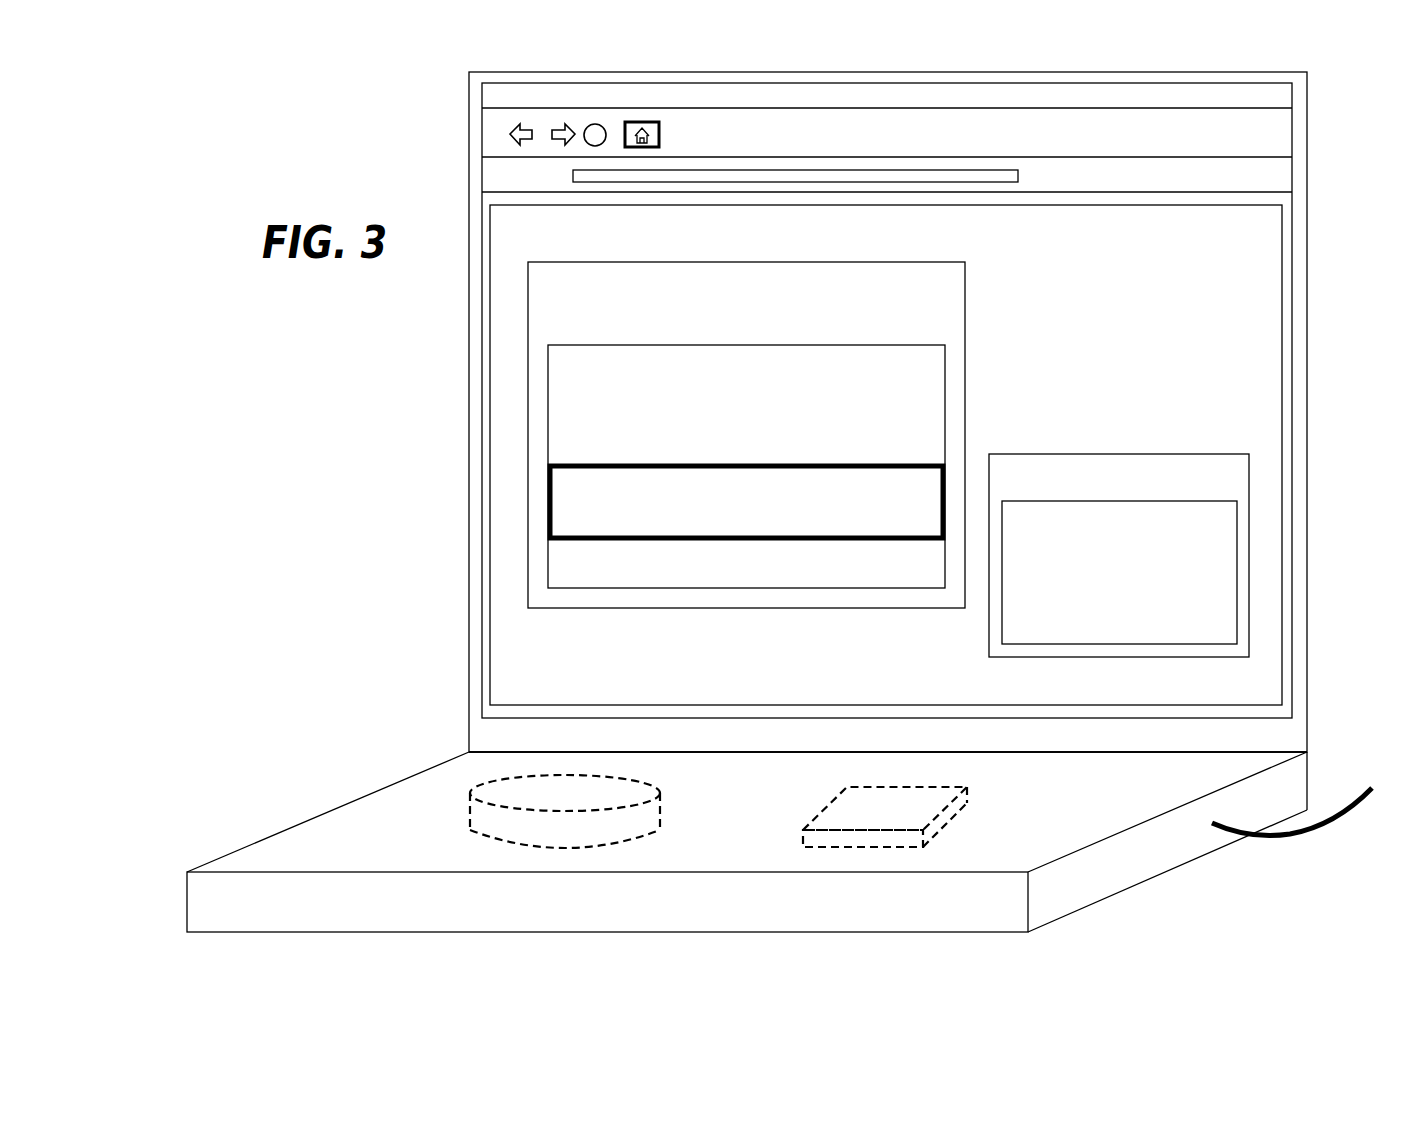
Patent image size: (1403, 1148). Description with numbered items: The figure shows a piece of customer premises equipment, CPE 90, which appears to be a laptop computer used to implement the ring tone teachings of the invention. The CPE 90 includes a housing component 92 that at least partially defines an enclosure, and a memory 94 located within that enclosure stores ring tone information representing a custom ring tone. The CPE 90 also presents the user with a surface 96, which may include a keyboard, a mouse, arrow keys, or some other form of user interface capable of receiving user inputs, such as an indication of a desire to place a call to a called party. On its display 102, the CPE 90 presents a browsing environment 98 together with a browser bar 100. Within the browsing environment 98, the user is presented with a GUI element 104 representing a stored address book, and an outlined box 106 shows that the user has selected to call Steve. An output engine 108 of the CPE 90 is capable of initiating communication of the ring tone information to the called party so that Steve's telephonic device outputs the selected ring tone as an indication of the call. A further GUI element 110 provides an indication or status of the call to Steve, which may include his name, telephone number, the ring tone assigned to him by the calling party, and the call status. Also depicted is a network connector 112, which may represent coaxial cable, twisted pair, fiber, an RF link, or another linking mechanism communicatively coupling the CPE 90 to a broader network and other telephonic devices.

The customer premises equipment 90 is at (345, 444).
The housing component 92 is at (747, 842).
The memory 94 is at (565, 811).
The surface 96 is at (843, 800).
The browsing environment 98 is at (1311, 190).
The browser bar 100 is at (1311, 83).
The display 102 is at (448, 146).
The GUI element 104 is at (746, 435).
The outlined box 106 is at (760, 552).
The output engine 108 is at (885, 817).
The GUI element 110 is at (1119, 555).
The network connector 112 is at (1367, 822).